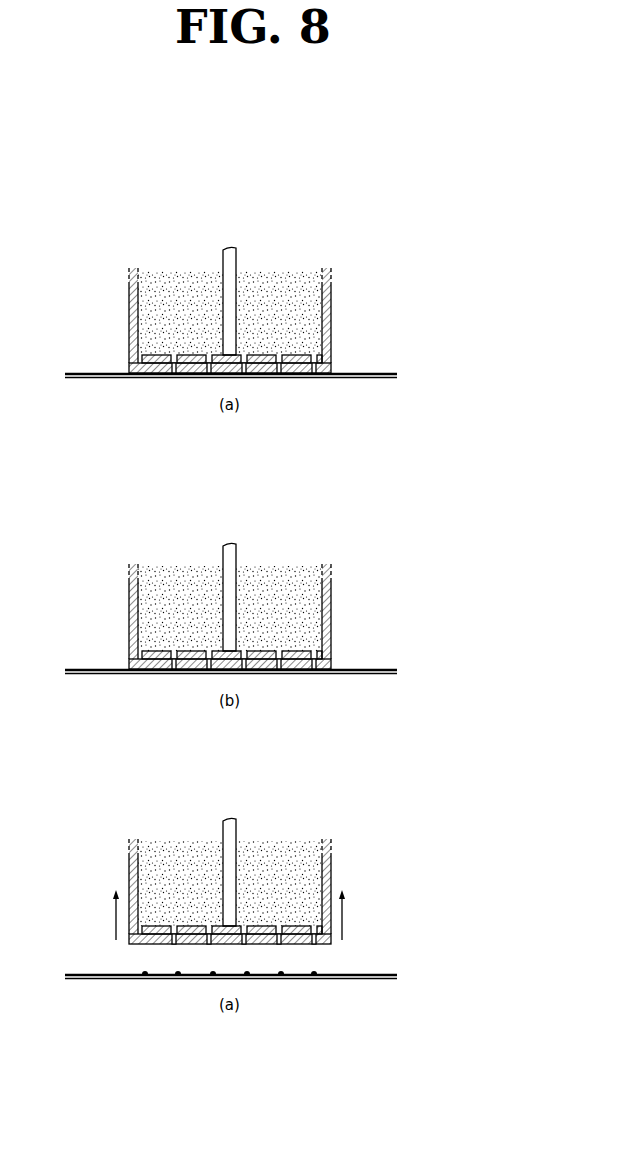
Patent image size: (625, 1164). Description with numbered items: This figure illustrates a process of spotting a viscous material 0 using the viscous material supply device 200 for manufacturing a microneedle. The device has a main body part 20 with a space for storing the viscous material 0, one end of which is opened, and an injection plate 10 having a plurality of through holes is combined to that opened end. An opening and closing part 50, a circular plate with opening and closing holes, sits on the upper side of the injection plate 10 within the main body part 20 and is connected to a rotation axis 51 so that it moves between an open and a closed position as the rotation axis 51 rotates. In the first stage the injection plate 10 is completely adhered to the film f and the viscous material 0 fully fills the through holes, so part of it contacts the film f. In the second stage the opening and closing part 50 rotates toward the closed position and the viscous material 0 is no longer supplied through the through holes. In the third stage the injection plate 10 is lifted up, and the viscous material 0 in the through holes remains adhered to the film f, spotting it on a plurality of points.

The viscous material supply device 200 is at (101, 230).
The rotation axis 51 is at (232, 257).
The viscous material 0 is at (302, 298).
The main body part 20 is at (328, 316).
The opening and closing part 50 is at (160, 362).
The injection plate 10 is at (160, 371).
The film f is at (397, 375).